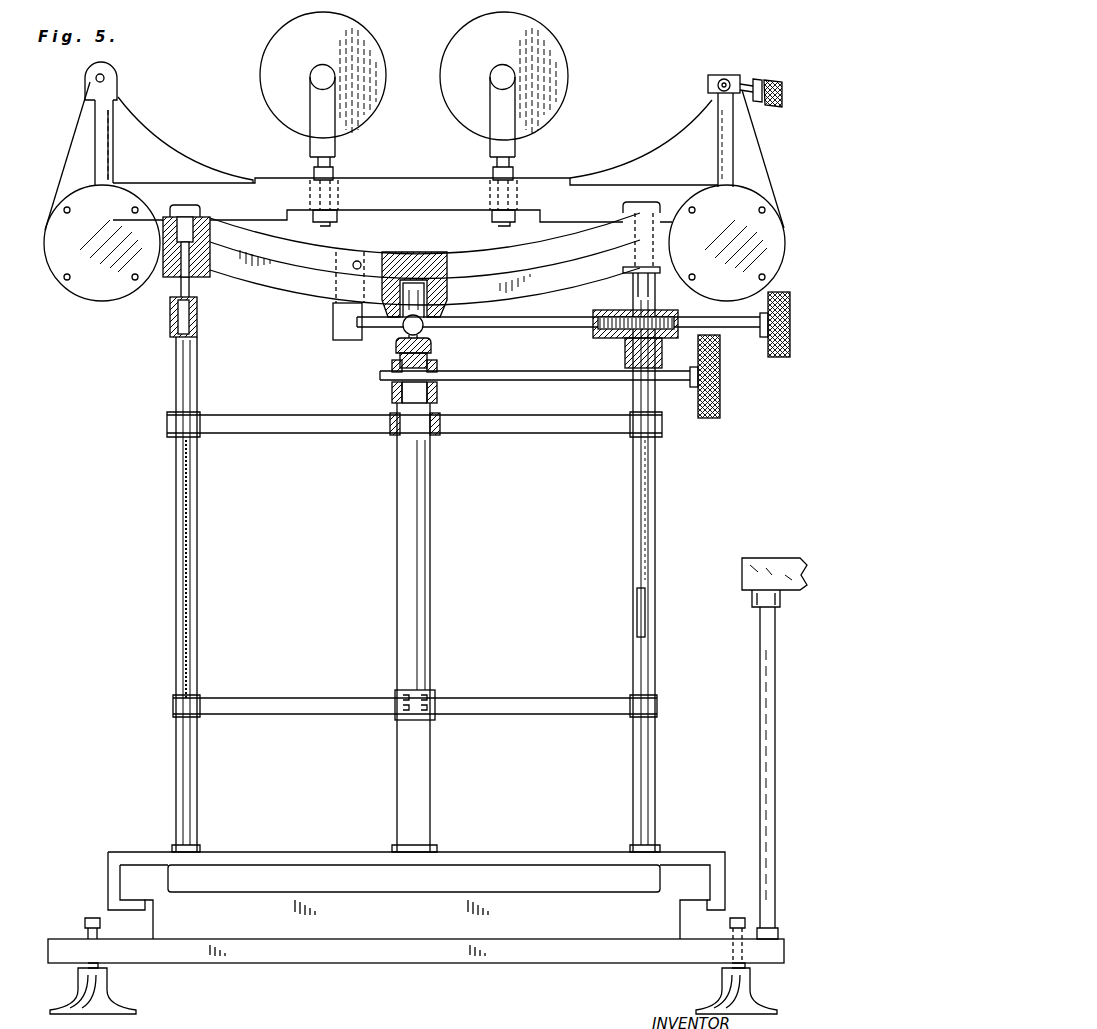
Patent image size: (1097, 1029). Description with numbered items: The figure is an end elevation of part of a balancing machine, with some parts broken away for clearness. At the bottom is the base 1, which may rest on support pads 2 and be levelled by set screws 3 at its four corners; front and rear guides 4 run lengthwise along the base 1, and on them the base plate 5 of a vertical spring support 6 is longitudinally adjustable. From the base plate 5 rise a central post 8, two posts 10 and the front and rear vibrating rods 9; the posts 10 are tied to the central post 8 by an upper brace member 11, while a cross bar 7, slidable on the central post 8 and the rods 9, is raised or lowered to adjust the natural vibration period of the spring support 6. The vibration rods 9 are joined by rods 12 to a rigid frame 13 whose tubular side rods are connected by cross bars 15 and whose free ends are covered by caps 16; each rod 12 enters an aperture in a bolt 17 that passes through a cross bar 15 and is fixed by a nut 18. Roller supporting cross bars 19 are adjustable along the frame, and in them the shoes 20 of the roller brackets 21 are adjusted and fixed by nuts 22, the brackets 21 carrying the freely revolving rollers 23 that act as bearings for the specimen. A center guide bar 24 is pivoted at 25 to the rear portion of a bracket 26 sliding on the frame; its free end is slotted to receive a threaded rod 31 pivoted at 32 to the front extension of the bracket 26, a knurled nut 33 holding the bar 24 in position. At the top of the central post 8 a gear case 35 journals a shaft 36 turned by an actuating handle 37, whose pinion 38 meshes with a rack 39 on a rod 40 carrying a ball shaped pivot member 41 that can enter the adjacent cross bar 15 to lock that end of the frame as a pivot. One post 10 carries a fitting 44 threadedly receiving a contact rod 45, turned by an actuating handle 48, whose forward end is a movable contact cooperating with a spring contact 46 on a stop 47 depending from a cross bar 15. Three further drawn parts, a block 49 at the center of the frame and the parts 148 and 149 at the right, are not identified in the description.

The base 1 is at (563, 957).
The support pads 2 is at (102, 993).
The set screws 3 is at (87, 927).
The front and rear guides 4 is at (120, 893).
The base plate 5 is at (498, 857).
The vertical spring support 6 is at (175, 545).
The cross bar 7 is at (522, 703).
The central post 8 is at (422, 607).
The vibrating rods 9 is at (197, 555).
The posts 10 is at (197, 630).
The upper brace member 11 is at (510, 423).
The rods 12 is at (195, 282).
The rigid frame 13 is at (72, 183).
The cross bars 15 is at (293, 285).
The caps 16 is at (135, 260).
The bolts 17 is at (167, 280).
The nuts 18 is at (213, 212).
The roller supporting cross bars 19 is at (435, 200).
The shoes 20 is at (518, 200).
The roller brackets 21 is at (330, 147).
The nuts 22 is at (523, 168).
The rollers 23 is at (414, 76).
The bar 24 is at (641, 249).
The pivot 25 is at (104, 78).
The bracket 26 is at (414, 140).
The threaded rod 31 is at (782, 98).
The pivot 32 is at (727, 77).
The knurled nut 33 is at (777, 80).
The gear case 35 is at (438, 392).
The shaft 36 is at (565, 371).
The actuating handle 37 is at (720, 382).
The pinion 38 is at (440, 365).
The rack 39 is at (392, 392).
The rod 40 is at (390, 367).
The ball shaped pivot member 41 is at (433, 319).
The fitting 44 is at (612, 310).
The contact rod 45 is at (537, 320).
The spring contact 46 is at (787, 293).
The stop 47 is at (392, 345).
The actuating handle 48 is at (431, 342).
The clamp block 49 is at (448, 278).
The holder 148 is at (774, 575).
The rod 149 is at (765, 683).